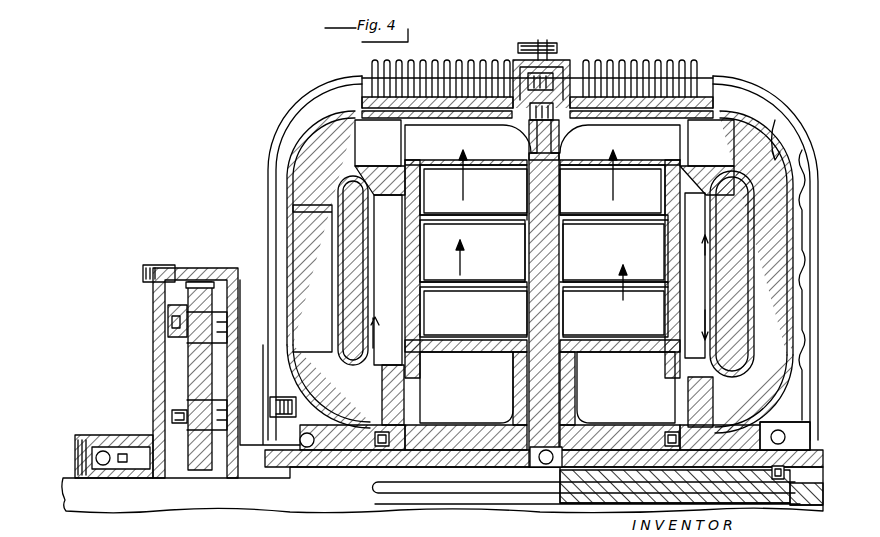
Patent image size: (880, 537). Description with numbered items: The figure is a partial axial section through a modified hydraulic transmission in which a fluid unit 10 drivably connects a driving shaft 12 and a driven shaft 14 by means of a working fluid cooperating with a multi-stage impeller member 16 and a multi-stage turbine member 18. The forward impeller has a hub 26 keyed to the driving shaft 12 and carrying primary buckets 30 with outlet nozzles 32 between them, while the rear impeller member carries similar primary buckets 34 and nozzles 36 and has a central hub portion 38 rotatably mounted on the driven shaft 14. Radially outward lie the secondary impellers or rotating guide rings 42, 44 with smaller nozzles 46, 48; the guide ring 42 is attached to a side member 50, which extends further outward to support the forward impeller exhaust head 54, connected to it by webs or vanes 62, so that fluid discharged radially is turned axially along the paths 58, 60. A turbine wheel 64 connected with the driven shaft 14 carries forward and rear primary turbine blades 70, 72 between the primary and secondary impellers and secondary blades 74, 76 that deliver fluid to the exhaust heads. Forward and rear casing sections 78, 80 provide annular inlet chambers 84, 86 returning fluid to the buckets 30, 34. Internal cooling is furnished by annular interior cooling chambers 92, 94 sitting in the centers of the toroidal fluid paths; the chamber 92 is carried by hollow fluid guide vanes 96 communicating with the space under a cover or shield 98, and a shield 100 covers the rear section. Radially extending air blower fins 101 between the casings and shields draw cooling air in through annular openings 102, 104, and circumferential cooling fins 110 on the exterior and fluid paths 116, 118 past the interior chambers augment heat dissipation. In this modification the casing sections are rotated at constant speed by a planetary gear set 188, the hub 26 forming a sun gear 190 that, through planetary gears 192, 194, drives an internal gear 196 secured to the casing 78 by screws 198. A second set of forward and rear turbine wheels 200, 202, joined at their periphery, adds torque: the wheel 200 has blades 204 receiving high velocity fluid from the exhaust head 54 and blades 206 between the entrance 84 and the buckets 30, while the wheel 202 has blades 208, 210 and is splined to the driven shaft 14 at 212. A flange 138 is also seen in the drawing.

The fluid unit 10 is at (662, 46).
The driving shaft 12 is at (135, 498).
The driven shaft 14 is at (800, 440).
The multi-stage impeller member 16 is at (512, 384).
The multi-stage turbine member 18 is at (566, 154).
The hub 26 is at (496, 428).
The primary buckets 30 is at (466, 387).
The outlet nozzles 32 is at (466, 356).
The primary buckets 34 is at (626, 387).
The nozzles 36 is at (620, 382).
The central hub portion 38 is at (598, 422).
The secondary impeller 42 is at (473, 248).
The secondary impeller 44 is at (614, 248).
The nozzles 46 is at (438, 229).
The nozzles 48 is at (649, 229).
The side member 50 is at (408, 272).
The forward impeller exhaust head 54 is at (432, 122).
The fluid path 58 is at (340, 150).
The fluid path 60 is at (756, 168).
The webs or vanes 62 is at (410, 154).
The turbine wheel 64 is at (560, 190).
The forward primary turbine blades 70 is at (473, 309).
The rear primary turbine blades 72 is at (614, 309).
The secondary forward blades 74 is at (473, 190).
The secondary rear blades 76 is at (612, 190).
The forward casing section 78 is at (328, 386).
The rear casing section 80 is at (728, 98).
The annular inlet chamber 84 is at (392, 392).
The annular inlet chamber 86 is at (715, 393).
The forward interior cooling chamber 92 is at (372, 252).
The rear interior cooling chamber 94 is at (752, 250).
The hollow fluid guide vanes 96 is at (286, 252).
The cover or shield 98 is at (312, 100).
The shield 100 is at (762, 82).
The air blower fins 101 is at (284, 146).
The annular opening 102 is at (262, 392).
The annular opening 104 is at (790, 382).
The cooling fins 110 is at (463, 62).
The fluid path 116 is at (372, 332).
The fluid path 118 is at (714, 334).
The housing bottom flange 138 is at (328, 468).
The planetary gear set 188 is at (135, 330).
The sun gear 190 is at (200, 476).
The planetary gear 192 is at (200, 400).
The planetary gear 194 is at (186, 352).
The internal gear 196 is at (196, 268).
The screws 198 is at (278, 420).
The forward turbine wheel 200 is at (322, 168).
The rear turbine wheel 202 is at (756, 233).
The blades 204 is at (394, 134).
The blades 206 is at (356, 407).
The blades 208 is at (721, 134).
The blades 210 is at (722, 400).
The spline connection 212 is at (712, 450).